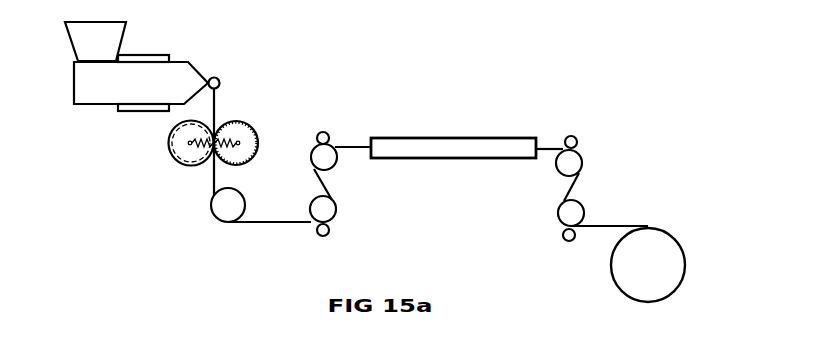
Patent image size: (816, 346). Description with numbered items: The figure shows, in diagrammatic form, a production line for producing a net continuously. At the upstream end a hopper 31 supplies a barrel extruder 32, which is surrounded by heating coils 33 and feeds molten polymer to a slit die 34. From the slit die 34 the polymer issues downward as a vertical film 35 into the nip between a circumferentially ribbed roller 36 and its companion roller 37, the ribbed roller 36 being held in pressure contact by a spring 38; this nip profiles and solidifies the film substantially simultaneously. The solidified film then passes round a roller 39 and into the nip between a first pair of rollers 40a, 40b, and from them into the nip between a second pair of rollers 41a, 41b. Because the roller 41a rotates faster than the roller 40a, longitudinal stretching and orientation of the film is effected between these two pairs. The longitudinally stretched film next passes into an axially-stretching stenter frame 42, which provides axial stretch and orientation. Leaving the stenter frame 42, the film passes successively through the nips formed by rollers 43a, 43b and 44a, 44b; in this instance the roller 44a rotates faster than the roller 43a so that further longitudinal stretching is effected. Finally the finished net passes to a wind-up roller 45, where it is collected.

The hopper 31 is at (107, 33).
The barrel extruder 32 is at (85, 87).
The heating coils 33 is at (127, 112).
The slit die 34 is at (213, 77).
The vertical film 35 is at (217, 102).
The circumferentially ribbed roller 36 is at (167, 150).
The toothed roller 37 is at (250, 143).
The spring 38 is at (198, 152).
The roller 39 is at (223, 212).
The first pair of rollers 40a is at (327, 208).
The first pair of rollers 40b is at (327, 235).
The second pair of rollers 41a is at (332, 163).
The second pair of rollers 41b is at (328, 136).
The axially-stretching stenter frame 42 is at (468, 130).
The roller 43a is at (575, 162).
The roller 43b is at (577, 140).
The roller 44a is at (580, 213).
The roller 44b is at (562, 242).
The wind-up roller 45 is at (628, 278).